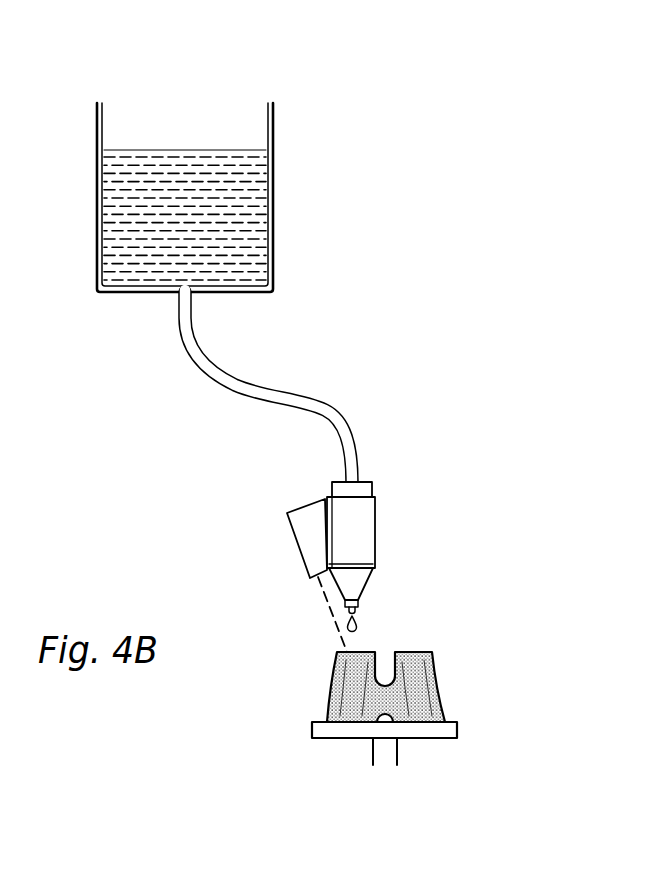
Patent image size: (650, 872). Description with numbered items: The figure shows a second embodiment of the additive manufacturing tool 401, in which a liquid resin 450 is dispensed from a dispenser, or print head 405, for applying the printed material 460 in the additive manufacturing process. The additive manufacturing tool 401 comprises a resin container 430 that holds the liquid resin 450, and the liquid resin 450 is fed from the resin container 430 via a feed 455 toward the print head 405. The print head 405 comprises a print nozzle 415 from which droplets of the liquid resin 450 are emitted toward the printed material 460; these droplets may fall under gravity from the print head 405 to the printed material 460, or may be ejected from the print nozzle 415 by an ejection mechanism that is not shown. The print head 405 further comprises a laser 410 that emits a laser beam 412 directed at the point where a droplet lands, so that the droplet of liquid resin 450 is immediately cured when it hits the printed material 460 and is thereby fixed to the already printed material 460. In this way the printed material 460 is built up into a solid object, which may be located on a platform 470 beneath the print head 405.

The additive manufacturing tool 401 is at (455, 254).
The print head 405 is at (368, 523).
The laser 410 is at (307, 532).
The laser beam 412 is at (328, 605).
The print nozzle 415 is at (360, 612).
The resin container 430 is at (273, 197).
The liquid resin 450 is at (192, 173).
The feed 455 is at (327, 408).
The printed material 460 is at (427, 672).
The platform 470 is at (457, 730).